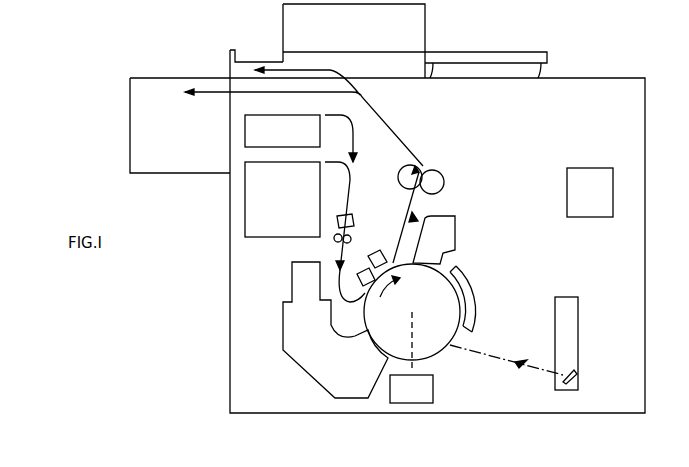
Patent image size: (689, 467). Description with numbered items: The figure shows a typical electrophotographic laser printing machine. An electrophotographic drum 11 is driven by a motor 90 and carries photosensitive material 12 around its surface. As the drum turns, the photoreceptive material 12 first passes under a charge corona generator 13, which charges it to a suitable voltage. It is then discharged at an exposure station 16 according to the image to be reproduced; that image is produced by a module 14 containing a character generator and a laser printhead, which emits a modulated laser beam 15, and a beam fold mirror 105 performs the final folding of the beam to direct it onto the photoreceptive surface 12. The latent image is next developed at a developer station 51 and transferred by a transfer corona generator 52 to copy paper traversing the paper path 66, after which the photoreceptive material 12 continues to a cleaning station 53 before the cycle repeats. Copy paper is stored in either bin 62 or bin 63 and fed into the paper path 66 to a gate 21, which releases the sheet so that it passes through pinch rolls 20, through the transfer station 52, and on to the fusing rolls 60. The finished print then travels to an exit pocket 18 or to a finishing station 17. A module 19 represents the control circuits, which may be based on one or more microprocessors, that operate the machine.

The electrophotographic drum 11 is at (429, 338).
The photosensitive material 12 is at (450, 272).
The charge corona generator 13 is at (473, 303).
The module 14 is at (575, 313).
The modulated laser beam 15 is at (528, 367).
The exposure station 16 is at (447, 355).
The finishing station 17 is at (167, 90).
The exit pocket 18 is at (248, 63).
The module 19 is at (595, 173).
The pinch rolls 20 is at (334, 240).
The gate 21 is at (348, 215).
The developer station 51 is at (298, 357).
The transfer corona generator 52 is at (363, 259).
The cleaning station 53 is at (443, 223).
The fusing rolls 60 is at (432, 162).
The bin 62 is at (277, 235).
The bin 63 is at (252, 132).
The paper path 66 is at (352, 175).
The motor 90 is at (427, 402).
The beam fold mirror 105 is at (577, 377).